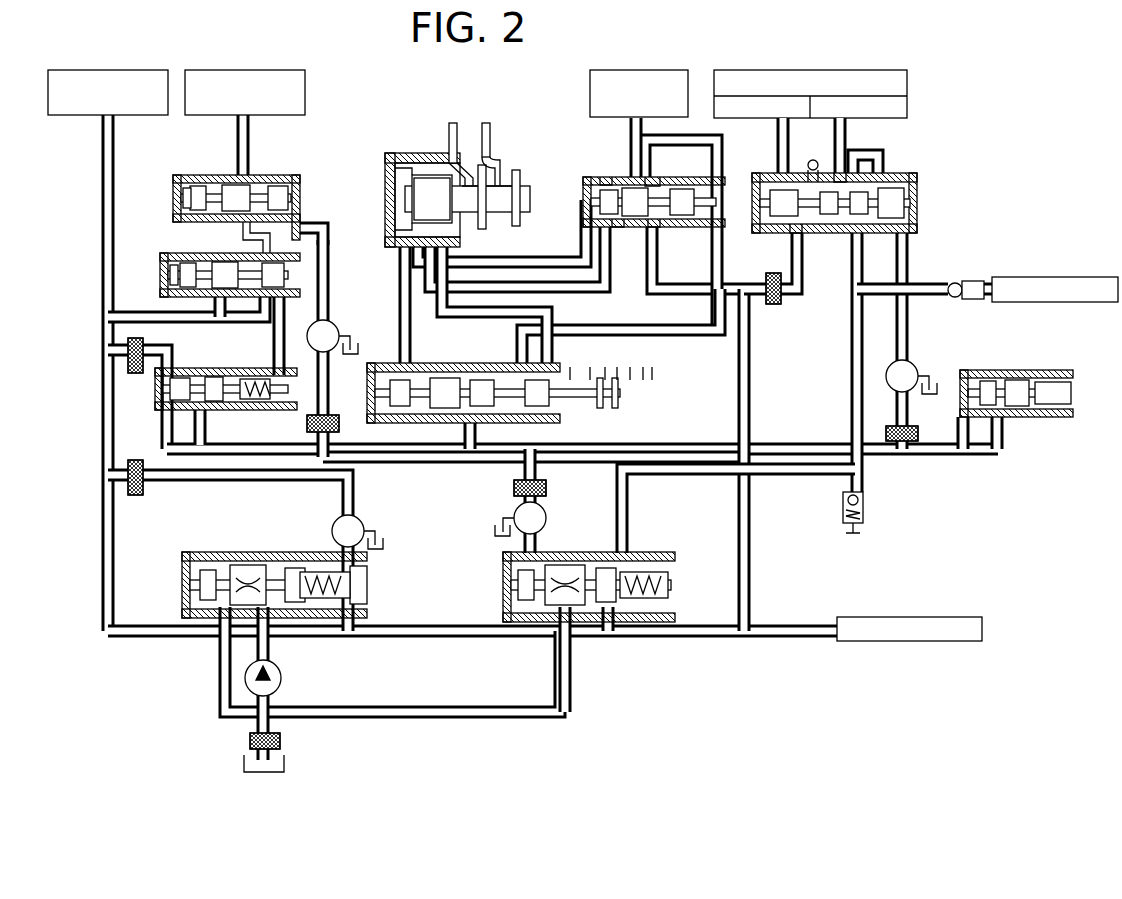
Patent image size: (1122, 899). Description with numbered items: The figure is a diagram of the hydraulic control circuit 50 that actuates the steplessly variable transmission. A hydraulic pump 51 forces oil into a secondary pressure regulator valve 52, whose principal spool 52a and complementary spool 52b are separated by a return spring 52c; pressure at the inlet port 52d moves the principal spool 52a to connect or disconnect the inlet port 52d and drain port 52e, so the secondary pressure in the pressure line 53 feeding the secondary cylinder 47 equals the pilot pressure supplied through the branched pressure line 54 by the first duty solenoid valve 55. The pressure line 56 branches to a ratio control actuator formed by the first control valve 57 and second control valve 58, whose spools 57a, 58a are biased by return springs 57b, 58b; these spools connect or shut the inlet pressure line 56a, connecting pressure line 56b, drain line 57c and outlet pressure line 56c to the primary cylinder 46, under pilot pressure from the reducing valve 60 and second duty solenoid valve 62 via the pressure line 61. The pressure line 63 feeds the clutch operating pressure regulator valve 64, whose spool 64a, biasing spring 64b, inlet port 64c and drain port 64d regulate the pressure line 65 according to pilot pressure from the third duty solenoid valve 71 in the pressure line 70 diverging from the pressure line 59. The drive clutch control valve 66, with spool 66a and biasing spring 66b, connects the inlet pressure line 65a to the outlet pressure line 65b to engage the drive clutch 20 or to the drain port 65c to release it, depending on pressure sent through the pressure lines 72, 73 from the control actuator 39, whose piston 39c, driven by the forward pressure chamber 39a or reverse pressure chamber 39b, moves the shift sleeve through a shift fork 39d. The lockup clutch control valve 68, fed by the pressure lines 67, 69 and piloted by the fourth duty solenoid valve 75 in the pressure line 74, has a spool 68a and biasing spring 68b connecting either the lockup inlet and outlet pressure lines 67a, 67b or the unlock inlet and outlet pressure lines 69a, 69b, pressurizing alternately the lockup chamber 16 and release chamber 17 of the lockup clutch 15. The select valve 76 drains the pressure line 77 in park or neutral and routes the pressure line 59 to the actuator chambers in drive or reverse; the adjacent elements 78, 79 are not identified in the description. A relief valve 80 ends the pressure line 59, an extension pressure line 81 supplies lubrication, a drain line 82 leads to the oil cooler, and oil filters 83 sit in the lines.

The lockup clutch 15 is at (880, 70).
The lockup chamber 16 is at (735, 118).
The release chamber 17 is at (908, 102).
The drive clutch 20 is at (660, 70).
The control actuator 39 is at (396, 150).
The forward pressure chamber 39a is at (426, 175).
The reverse pressure chamber 39b is at (385, 180).
The piston 39c is at (385, 216).
The shift fork 39d is at (498, 160).
The primary cylinder 46 is at (295, 70).
The secondary cylinder 47 is at (162, 70).
The hydraulic control circuit 50 is at (282, 752).
The hydraulic pump 51 is at (283, 682).
The secondary pressure regulator valve 52 is at (230, 552).
The principal spool 52a is at (244, 578).
The complementary spool 52b is at (320, 568).
The return spring 52c is at (296, 560).
The inlet port 52d is at (270, 622).
The drain port 52e is at (221, 625).
The pressure line 53 is at (113, 570).
The branched pressure line 54 is at (258, 480).
The first duty solenoid valve 55 is at (365, 525).
The pressure line 56 is at (165, 320).
The inlet pressure line 56a is at (279, 330).
The connecting pressure line 56b is at (304, 229).
The outlet pressure line 56c is at (250, 133).
The first control valve 57 is at (160, 262).
The spool 57a is at (216, 268).
The return spring 57b is at (170, 262).
The drain line 57c is at (216, 302).
The second control valve 58 is at (172, 190).
The spool 58a is at (224, 184).
The return spring 58b is at (186, 176).
The pressure line 59 is at (262, 447).
The reducing valve 60 is at (250, 368).
The pressure line 61 is at (330, 282).
The second duty solenoid valve 62 is at (333, 324).
The pressure line 63 is at (441, 625).
The clutch operating pressure regulator valve 64 is at (565, 550).
The spool 64a is at (580, 570).
The biasing spring 64b is at (660, 585).
The inlet port 64c is at (608, 622).
The drain port 64d is at (575, 615).
The pressure line 65 is at (680, 292).
The inlet pressure line 65a is at (656, 226).
The outlet pressure line 65b is at (608, 176).
The drain port 65c is at (616, 232).
The drive clutch control valve 66 is at (590, 176).
The spool 66a is at (660, 176).
The biasing spring 66b is at (684, 188).
The pressure line 67 is at (790, 300).
The lockup inlet pressure line 67a is at (792, 230).
The lockup outlet pressure line 67b is at (808, 170).
The lockup clutch control valve 68 is at (916, 192).
The spool 68a is at (890, 186).
The biasing spring 68b is at (762, 186).
The pressure line 69 is at (850, 383).
The unlock inlet pressure line 69a is at (840, 240).
The unlock outlet pressure line 69b is at (842, 180).
The pressure line 70 is at (525, 466).
The third duty solenoid valve 71 is at (513, 513).
The pressure line 72 is at (548, 262).
The pressure line 73 is at (572, 290).
The pressure line 74 is at (908, 326).
The fourth duty solenoid valve 75 is at (912, 370).
The select valve 76 is at (483, 330).
The pressure line 77 is at (690, 334).
The selector valve 78 is at (440, 363).
The passage 79 is at (401, 328).
The relief valve 80 is at (1020, 370).
The extension pressure line 81 is at (789, 625).
The drain line 82 is at (930, 285).
The oil filters 83 is at (134, 374).